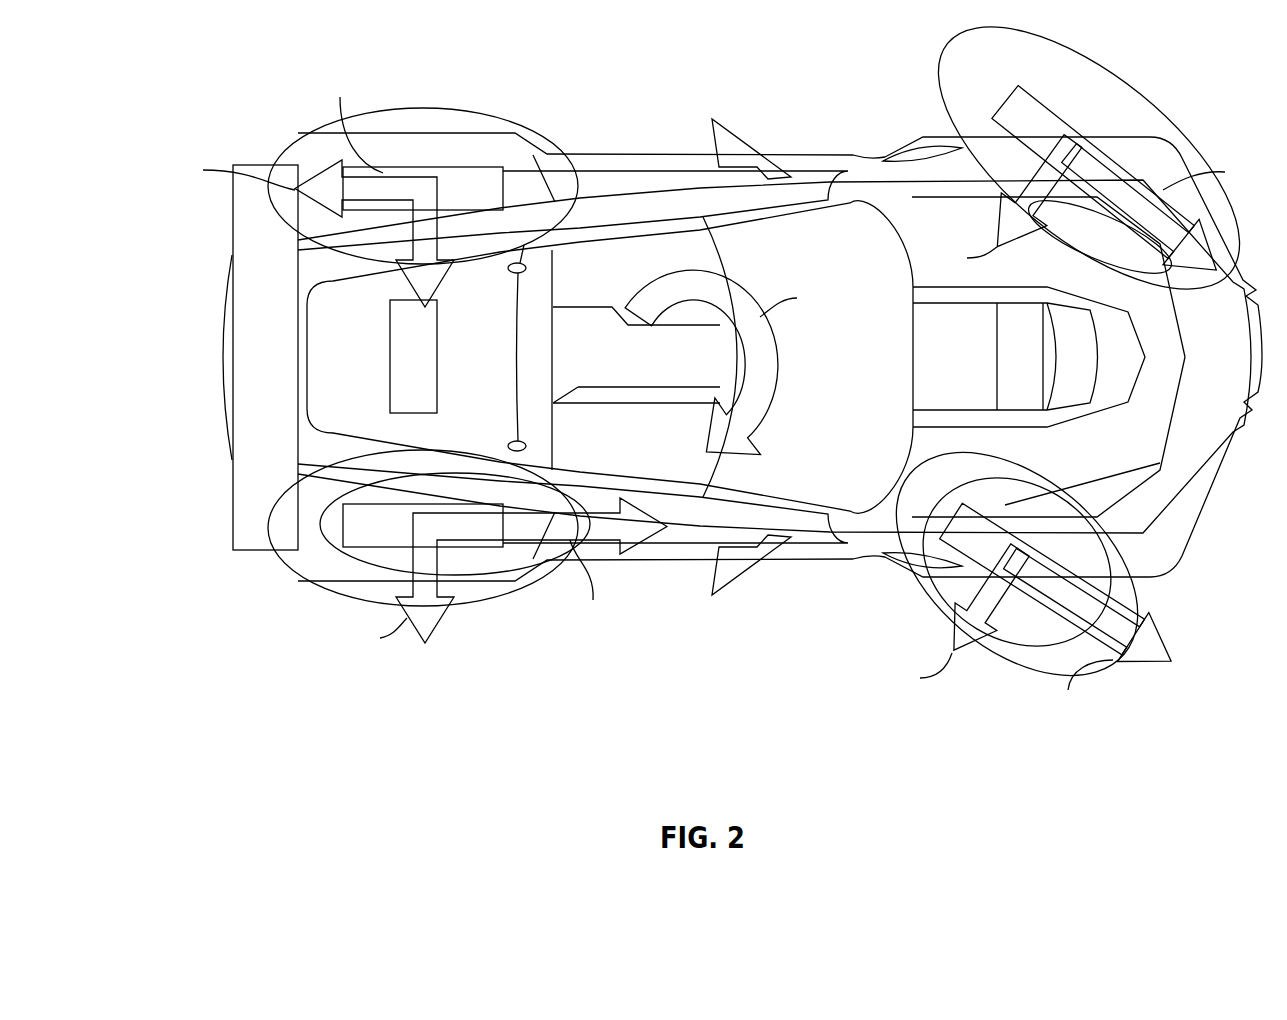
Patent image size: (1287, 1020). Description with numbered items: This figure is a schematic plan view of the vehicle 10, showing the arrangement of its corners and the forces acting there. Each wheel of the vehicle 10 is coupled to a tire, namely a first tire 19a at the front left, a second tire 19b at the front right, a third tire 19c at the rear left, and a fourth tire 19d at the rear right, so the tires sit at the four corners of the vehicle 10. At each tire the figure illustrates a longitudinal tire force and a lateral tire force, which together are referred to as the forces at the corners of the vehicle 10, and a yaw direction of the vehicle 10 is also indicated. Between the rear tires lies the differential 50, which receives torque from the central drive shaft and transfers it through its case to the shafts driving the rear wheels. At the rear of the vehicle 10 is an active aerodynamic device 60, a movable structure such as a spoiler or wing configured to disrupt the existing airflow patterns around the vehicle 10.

The vehicle 10 is at (805, 58).
The first tire 19a is at (1040, 100).
The second tire 19b is at (1007, 523).
The third tire 19c is at (477, 167).
The fourth tire 19d is at (347, 530).
The differential 50 is at (387, 367).
The active aerodynamic device 60 is at (250, 400).